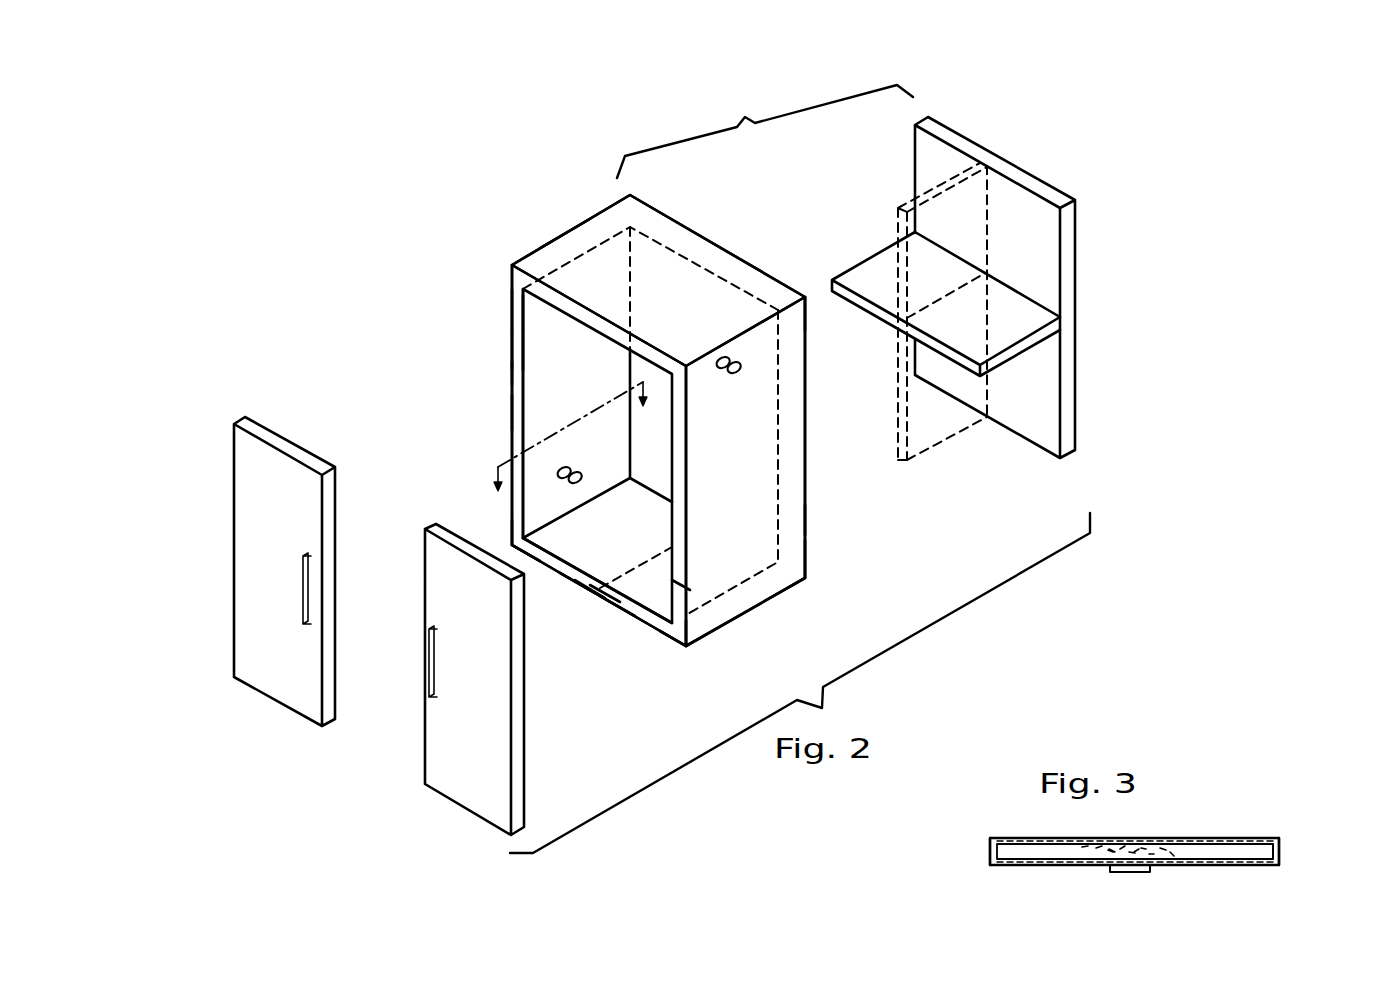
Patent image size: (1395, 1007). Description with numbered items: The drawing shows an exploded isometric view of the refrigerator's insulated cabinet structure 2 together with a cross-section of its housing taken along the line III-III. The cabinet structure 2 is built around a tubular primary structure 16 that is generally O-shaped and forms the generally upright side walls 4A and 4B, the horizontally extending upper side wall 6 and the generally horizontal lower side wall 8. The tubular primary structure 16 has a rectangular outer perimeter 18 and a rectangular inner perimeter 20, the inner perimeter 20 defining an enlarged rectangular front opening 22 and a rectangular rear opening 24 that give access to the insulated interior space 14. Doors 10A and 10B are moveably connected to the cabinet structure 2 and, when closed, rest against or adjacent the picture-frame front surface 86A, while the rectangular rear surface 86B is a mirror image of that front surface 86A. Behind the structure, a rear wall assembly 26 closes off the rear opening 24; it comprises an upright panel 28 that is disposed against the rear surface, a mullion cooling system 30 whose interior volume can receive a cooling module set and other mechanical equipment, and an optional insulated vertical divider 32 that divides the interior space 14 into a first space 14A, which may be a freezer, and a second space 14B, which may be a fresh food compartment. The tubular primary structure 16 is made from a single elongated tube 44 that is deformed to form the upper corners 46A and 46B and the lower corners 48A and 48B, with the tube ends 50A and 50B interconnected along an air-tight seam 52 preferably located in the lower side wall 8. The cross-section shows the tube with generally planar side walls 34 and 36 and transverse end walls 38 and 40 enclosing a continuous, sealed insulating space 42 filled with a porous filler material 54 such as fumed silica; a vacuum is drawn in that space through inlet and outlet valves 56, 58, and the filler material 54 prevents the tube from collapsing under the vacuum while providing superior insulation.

In FIG. 2, the insulated cabinet structure 2 is at (800, 468).
In FIG. 2, the upright side wall 4A is at (510, 289).
In FIG. 2, the upright side wall 4B is at (805, 445).
In FIG. 2, the upper side wall 6 is at (697, 248).
In FIG. 2, the lower side wall 8 is at (645, 625).
In FIG. 2, the door 10A is at (269, 677).
In FIG. 2, the door 10B is at (472, 799).
In FIG. 2, the insulated interior space 14 is at (535, 350).
In FIG. 2, the first space 14A is at (537, 328).
In FIG. 2, the second space 14B is at (647, 597).
In FIG. 2, the tubular primary structure 16 is at (597, 211).
In FIG. 3, the tubular primary structure 16 is at (1231, 836).
In FIG. 2, the rectangular outer perimeter 18 is at (512, 410).
In FIG. 2, the rectangular inner perimeter 20 is at (528, 382).
In FIG. 2, the front opening 22 is at (577, 553).
In FIG. 2, the rear opening 24 is at (637, 474).
In FIG. 2, the rear wall assembly 26 is at (991, 274).
In FIG. 2, the upright panel 28 is at (1078, 240).
In FIG. 2, the mullion cooling system 30 is at (875, 265).
In FIG. 2, the insulated vertical panel or divider 32 is at (903, 208).
In FIG. 3, the planar side wall 34 is at (1062, 837).
In FIG. 3, the planar side wall 36 is at (1063, 867).
In FIG. 3, the first end 38 is at (990, 841).
In FIG. 3, the end wall 40 is at (1279, 843).
In FIG. 3, the sealed insulating space 42 is at (1197, 847).
In FIG. 2, the elongated tube 44 is at (805, 548).
In FIG. 2, the upper corner 46A is at (572, 225).
In FIG. 2, the upper corner 46B is at (805, 300).
In FIG. 2, the lower corner 48A is at (511, 544).
In FIG. 2, the lower corner 48B is at (687, 646).
In FIG. 2, the tube end 50A is at (588, 581).
In FIG. 2, the tube end 50B is at (617, 597).
In FIG. 2, the air-tight seam 52 is at (603, 596).
In FIG. 3, the porous filler material 54 is at (1155, 848).
In FIG. 2, the inlet valve 56 is at (588, 476).
In FIG. 2, the outlet valve 58 is at (747, 370).
In FIG. 2, the front surface 86A is at (680, 585).
In FIG. 2, the rear surface 86B is at (805, 520).
In FIG. 2, the section line III- III is at (569, 452).